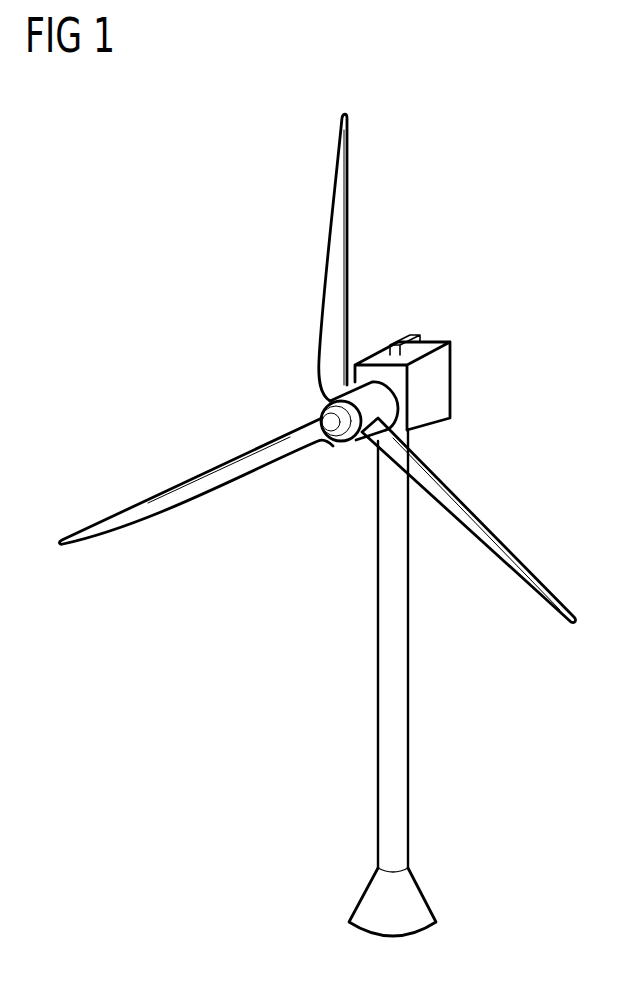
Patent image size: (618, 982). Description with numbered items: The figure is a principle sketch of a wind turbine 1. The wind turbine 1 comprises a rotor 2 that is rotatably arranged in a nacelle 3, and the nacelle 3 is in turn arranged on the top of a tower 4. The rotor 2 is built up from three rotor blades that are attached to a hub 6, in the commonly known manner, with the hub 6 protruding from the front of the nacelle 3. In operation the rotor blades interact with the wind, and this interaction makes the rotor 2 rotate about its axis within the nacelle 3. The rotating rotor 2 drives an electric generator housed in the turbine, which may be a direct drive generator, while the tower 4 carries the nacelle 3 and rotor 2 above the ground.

The wind turbine 1 is at (170, 276).
The rotor 2 is at (176, 481).
The nacelle 3 is at (437, 390).
The tower 4 is at (398, 813).
The hub 6 is at (382, 407).